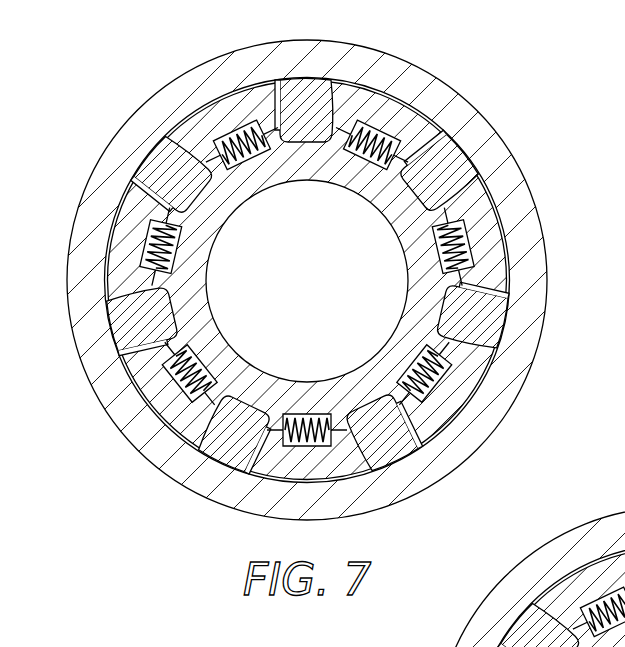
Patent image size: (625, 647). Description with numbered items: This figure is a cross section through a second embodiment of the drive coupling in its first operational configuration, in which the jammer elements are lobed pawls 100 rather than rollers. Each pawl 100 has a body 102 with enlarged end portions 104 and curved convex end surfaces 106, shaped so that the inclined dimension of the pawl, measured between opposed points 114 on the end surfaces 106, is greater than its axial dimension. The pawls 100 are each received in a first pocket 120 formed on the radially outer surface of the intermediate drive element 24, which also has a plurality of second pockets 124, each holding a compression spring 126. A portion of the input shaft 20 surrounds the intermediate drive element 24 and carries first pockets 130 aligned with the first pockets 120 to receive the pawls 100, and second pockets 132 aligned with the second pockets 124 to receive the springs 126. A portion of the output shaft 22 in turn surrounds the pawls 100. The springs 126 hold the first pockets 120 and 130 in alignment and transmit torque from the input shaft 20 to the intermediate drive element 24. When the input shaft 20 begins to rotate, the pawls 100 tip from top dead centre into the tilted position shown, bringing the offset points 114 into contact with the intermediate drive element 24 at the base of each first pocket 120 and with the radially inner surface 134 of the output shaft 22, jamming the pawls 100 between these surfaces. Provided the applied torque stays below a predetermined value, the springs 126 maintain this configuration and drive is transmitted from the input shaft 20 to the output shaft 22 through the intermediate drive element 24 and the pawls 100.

The input shaft 20 is at (423, 117).
The output shaft 22 is at (150, 108).
The intermediate drive element 24 is at (399, 231).
The lobed pawl 100 is at (453, 160).
The body 102 is at (358, 105).
The enlarged end portion 104 is at (300, 80).
The curved convex end surface 106 is at (237, 112).
The opposed point 114 is at (320, 92).
The first pocket 120 is at (233, 390).
The second pocket 124 is at (200, 343).
The compression spring 126 is at (140, 243).
The first pocket 130 is at (385, 96).
The second pocket 132 is at (505, 237).
The radially inner surface 134 is at (280, 78).